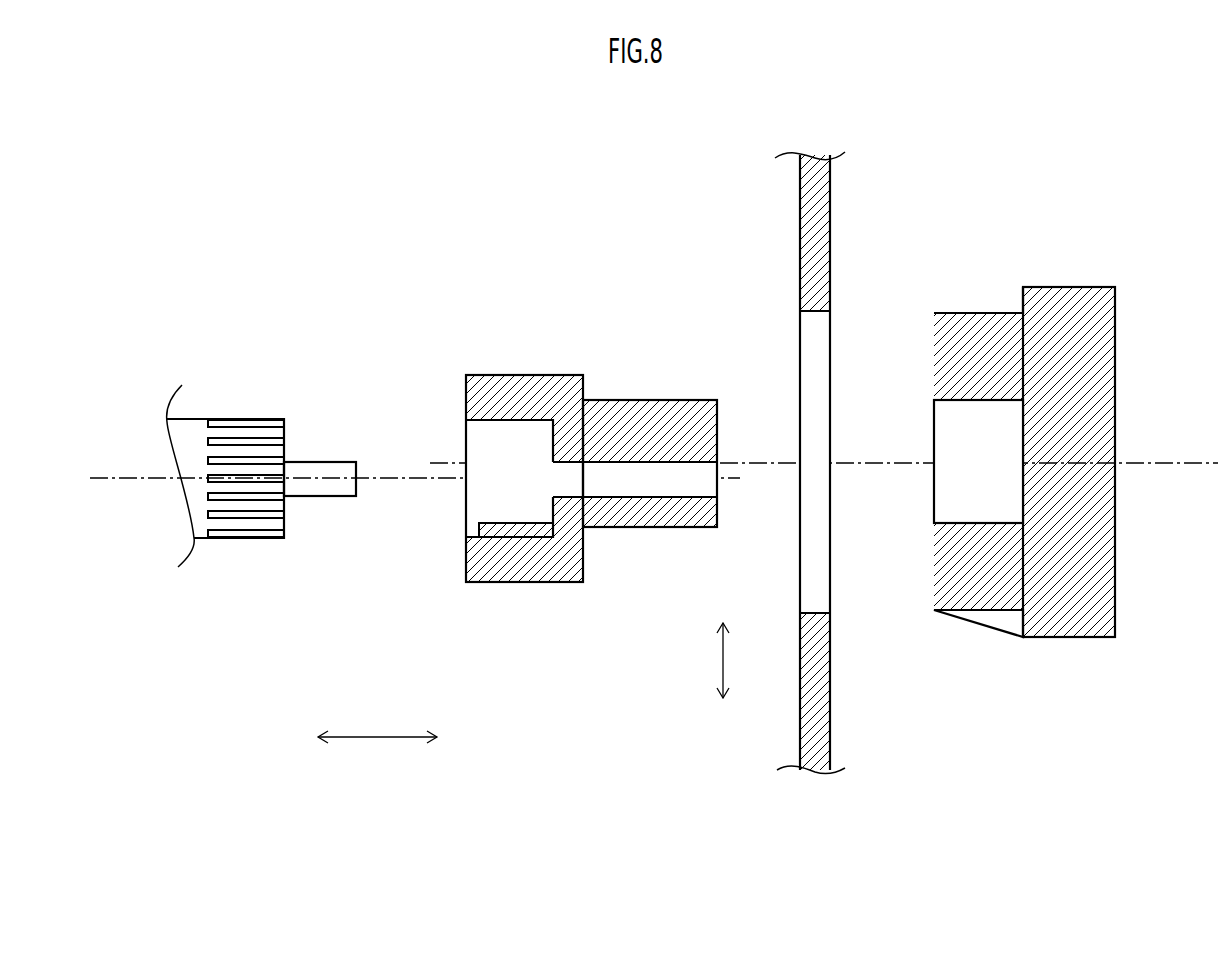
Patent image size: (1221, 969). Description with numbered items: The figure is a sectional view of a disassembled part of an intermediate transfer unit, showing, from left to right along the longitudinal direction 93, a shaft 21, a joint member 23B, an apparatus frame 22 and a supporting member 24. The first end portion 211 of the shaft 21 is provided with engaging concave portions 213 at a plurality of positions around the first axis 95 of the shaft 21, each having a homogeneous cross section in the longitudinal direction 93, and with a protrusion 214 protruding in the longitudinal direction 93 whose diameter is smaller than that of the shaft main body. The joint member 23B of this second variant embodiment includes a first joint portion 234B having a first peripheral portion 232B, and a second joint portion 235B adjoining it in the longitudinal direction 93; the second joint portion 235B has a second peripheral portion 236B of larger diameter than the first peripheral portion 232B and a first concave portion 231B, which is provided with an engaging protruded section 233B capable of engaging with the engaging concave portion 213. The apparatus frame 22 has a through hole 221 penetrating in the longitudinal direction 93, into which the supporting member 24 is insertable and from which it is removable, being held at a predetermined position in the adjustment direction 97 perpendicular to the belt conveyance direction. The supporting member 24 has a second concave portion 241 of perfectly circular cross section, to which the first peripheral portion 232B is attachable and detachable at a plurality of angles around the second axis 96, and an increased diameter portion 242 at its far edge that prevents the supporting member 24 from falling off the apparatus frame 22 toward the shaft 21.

The shaft 21 is at (261, 435).
The first end portion 211 is at (200, 537).
The engaging concave portion 213 is at (255, 425).
The protrusion 214 is at (325, 492).
The apparatus frame 22 is at (843, 463).
The through hole 221 is at (828, 330).
The joint member 23B is at (555, 444).
The first concave portion 231B is at (483, 497).
The first peripheral portion 232B is at (694, 400).
The engaging protruded section 233B is at (535, 515).
The first joint portion 234B is at (638, 400).
The second joint portion 235B is at (484, 375).
The second peripheral portion 236B is at (556, 375).
The supporting member 24 is at (994, 421).
The second concave portion 241 is at (955, 498).
The increased diameter portion 242 is at (1062, 287).
The longitudinal direction 93 is at (377, 722).
The first axis 95 is at (115, 478).
The second axis 96 is at (1206, 463).
The adjustment direction 97 is at (736, 660).